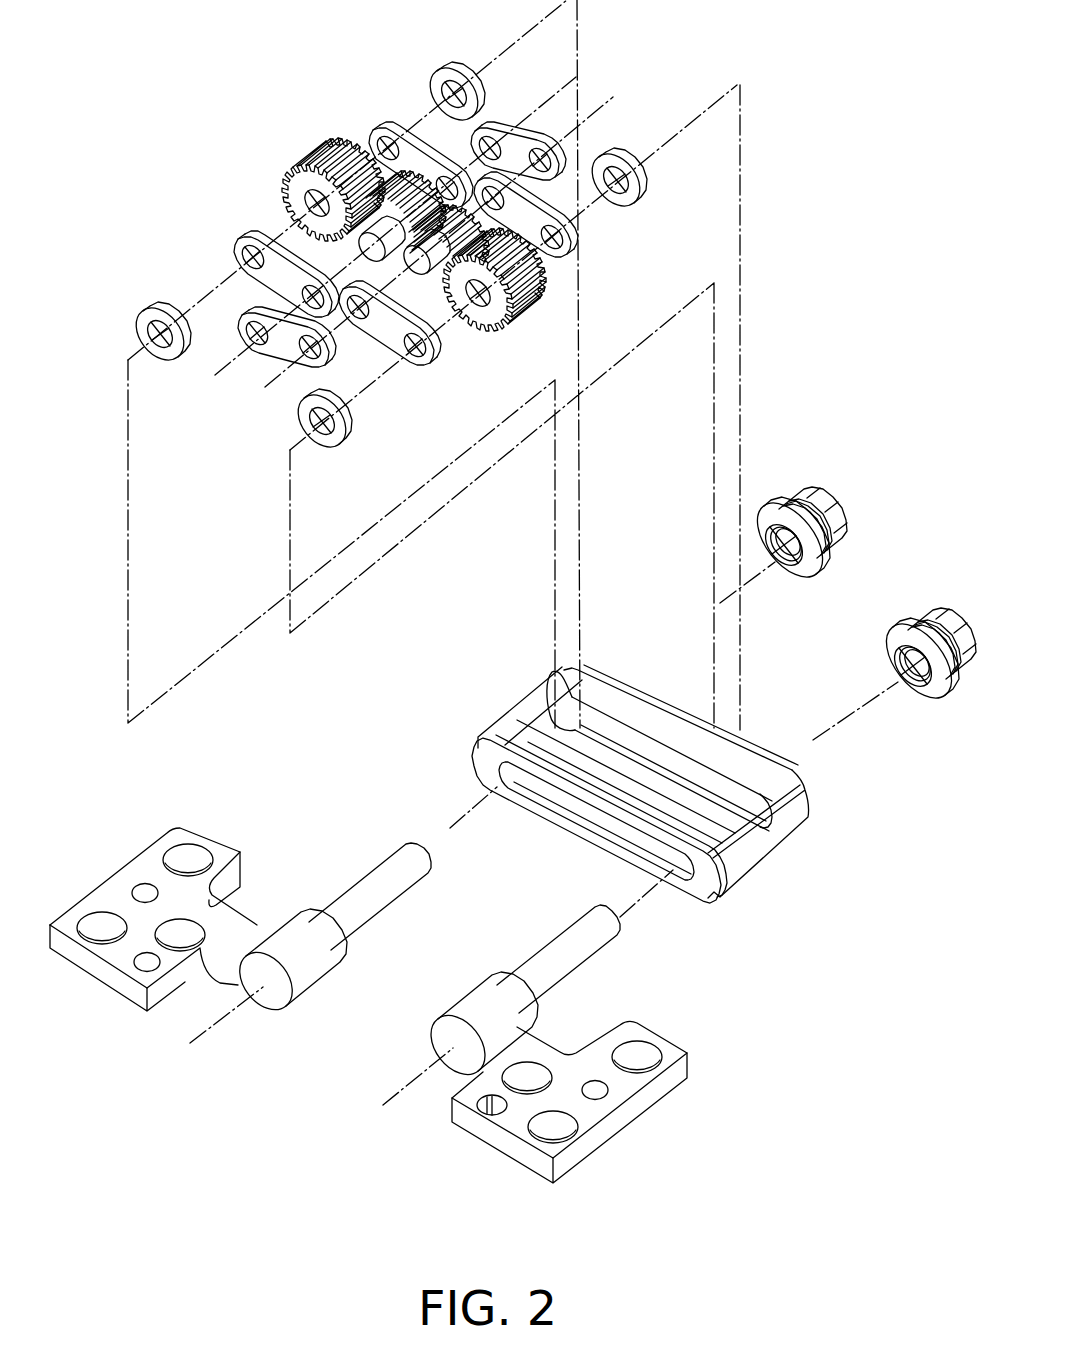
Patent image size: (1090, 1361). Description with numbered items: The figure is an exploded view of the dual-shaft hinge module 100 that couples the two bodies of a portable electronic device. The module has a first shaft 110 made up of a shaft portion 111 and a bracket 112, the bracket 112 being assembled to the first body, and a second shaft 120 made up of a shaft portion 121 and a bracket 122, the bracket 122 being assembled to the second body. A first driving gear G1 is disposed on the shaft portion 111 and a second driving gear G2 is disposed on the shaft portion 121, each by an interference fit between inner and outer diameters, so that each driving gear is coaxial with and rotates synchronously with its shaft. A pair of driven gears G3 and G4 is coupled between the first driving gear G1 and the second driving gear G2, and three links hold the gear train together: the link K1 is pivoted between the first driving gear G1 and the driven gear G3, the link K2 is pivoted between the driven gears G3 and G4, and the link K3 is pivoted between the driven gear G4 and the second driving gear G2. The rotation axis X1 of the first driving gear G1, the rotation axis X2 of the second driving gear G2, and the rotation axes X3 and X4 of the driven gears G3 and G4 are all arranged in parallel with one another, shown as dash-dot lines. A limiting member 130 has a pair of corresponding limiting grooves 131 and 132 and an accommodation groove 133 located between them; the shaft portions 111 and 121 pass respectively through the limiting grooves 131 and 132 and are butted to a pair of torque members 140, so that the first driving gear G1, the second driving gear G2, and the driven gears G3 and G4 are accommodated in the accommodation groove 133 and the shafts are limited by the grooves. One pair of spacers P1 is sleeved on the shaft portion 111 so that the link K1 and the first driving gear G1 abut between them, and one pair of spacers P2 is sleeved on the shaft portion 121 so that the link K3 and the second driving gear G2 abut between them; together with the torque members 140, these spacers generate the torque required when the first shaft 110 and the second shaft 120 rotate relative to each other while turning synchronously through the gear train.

The dual-shaft hinge module 100 is at (880, 1210).
The first shaft 110 is at (755, 950).
The shaft portion 111 is at (593, 937).
The bracket 112 is at (667, 1047).
The second shaft 120 is at (343, 796).
The shaft portion 121 is at (363, 897).
The bracket 122 is at (225, 855).
The limiting member 130 is at (794, 881).
The limiting groove 131 is at (596, 829).
The limiting groove 132 is at (678, 779).
The accommodation groove 133 is at (569, 708).
The torque member 140 is at (795, 498).
The first driving gear G1 is at (522, 314).
The second driving gear G2 is at (290, 182).
The driven gear G3 is at (430, 295).
The driven gear G4 is at (385, 190).
The link K1 is at (562, 258).
The link K2 is at (497, 133).
The link K3 is at (375, 130).
The spacer P1 is at (627, 203).
The spacer P2 is at (437, 73).
The rotation axis X1 is at (623, 913).
The rotation axis X2 is at (463, 822).
The rotation axis X3 is at (426, 261).
The rotation axis X4 is at (383, 245).